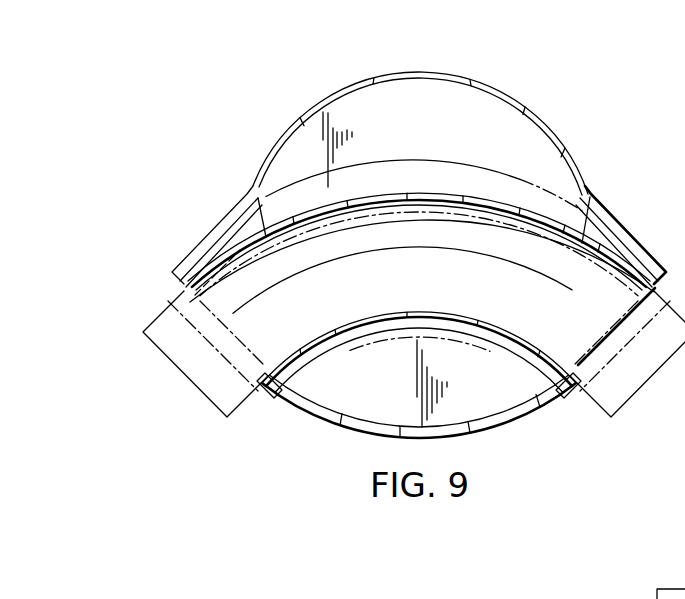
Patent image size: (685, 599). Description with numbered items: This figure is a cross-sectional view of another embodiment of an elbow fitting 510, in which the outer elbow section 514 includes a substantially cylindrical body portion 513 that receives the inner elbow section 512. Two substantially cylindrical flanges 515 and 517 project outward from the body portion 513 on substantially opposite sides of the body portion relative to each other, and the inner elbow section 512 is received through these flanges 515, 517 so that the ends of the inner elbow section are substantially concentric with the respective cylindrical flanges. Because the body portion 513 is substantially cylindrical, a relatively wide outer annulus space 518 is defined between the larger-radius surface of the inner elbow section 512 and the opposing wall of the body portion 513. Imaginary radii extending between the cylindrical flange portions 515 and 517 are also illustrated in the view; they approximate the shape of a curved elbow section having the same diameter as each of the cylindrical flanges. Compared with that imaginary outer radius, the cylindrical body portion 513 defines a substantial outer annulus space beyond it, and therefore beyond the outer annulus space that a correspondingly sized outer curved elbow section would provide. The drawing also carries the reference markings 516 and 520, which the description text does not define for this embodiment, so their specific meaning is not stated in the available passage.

The elbow fitting 510 is at (589, 110).
The inner elbow section 512 is at (500, 203).
The body portion 513 is at (342, 90).
The outer elbow section 514 is at (527, 110).
The cylindrical flange 515 is at (218, 224).
The lower lens 516 is at (457, 390).
The cylindrical flange 517 is at (630, 222).
The outer annulus space 518 is at (410, 133).
The tube axis 520 is at (170, 303).